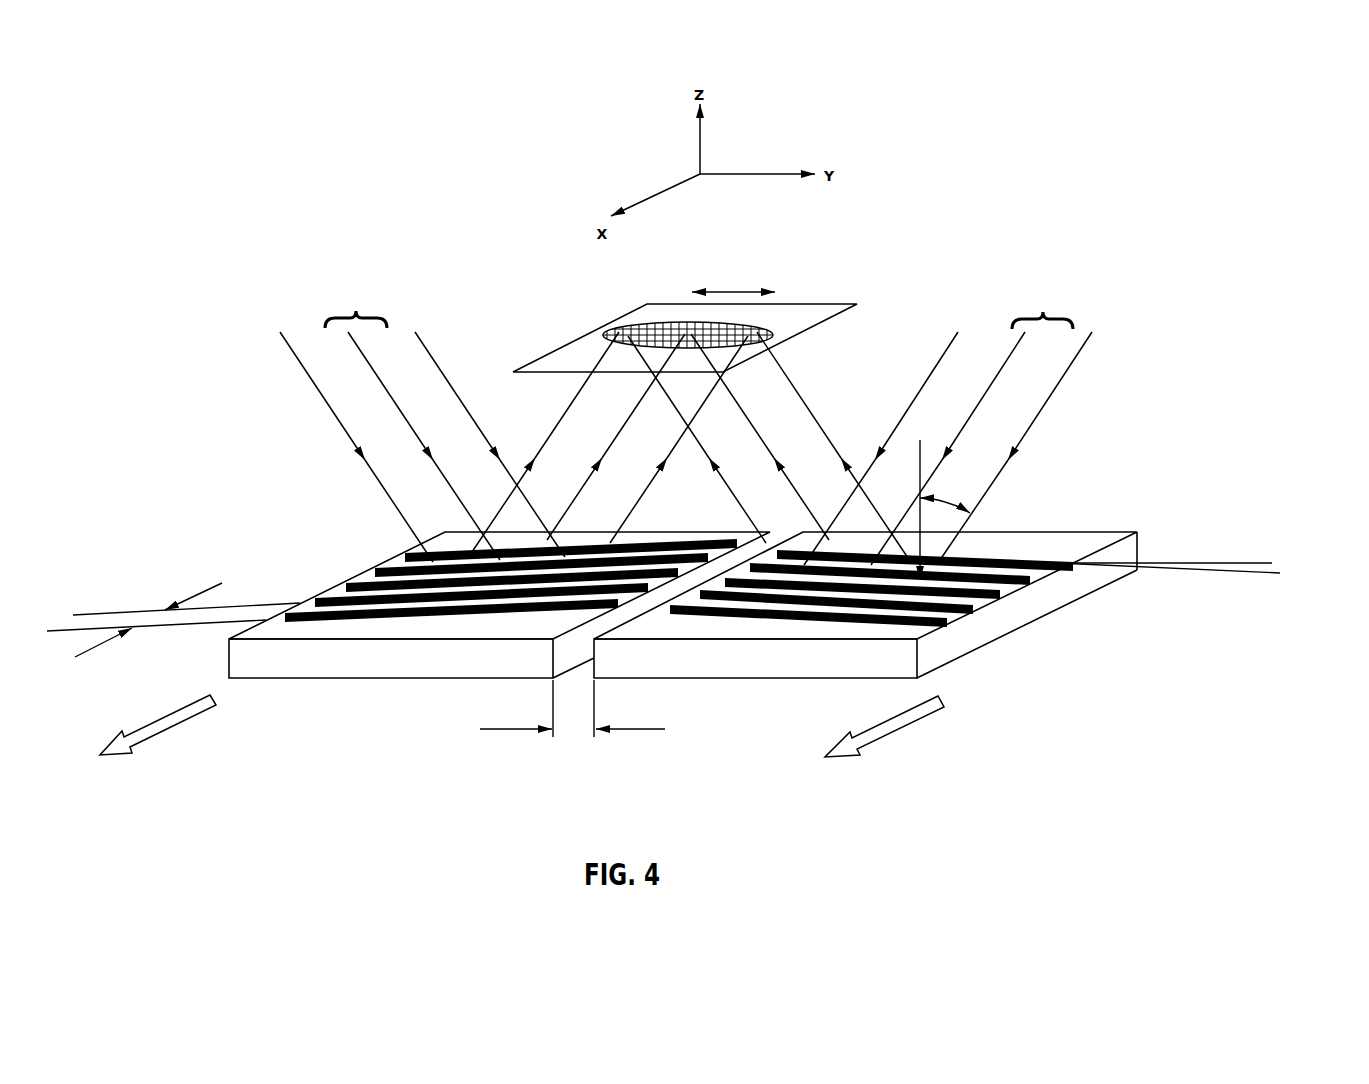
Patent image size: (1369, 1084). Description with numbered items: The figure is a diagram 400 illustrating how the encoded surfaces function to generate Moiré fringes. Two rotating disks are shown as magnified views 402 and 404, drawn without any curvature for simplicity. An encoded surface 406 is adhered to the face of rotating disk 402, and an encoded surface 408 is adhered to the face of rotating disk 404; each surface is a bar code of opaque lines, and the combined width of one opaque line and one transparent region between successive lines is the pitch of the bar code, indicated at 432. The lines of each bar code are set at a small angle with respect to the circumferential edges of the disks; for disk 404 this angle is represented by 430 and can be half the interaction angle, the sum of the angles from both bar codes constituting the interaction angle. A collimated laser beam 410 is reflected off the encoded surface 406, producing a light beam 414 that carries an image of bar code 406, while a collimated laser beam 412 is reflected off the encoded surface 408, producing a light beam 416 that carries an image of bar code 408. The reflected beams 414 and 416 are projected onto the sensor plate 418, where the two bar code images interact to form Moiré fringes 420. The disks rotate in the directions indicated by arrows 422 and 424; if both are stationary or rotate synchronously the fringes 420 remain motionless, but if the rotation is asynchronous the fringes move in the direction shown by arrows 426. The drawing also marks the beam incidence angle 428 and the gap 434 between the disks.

The diagram 400 is at (1010, 197).
The rotating disk 402 is at (245, 658).
The rotating disk 404 is at (915, 665).
The encoded surface 406 is at (380, 568).
The encoded surface 408 is at (1020, 585).
The collimated laser beam 410 is at (343, 312).
The collimated laser beam 412 is at (1033, 311).
The light beam 414 is at (605, 417).
The light beam 416 is at (768, 418).
The sensor plate 418 is at (817, 325).
The Moiré fringes 420 is at (643, 327).
The arrow 422 is at (182, 723).
The arrow 424 is at (907, 725).
The arrows 426 is at (728, 291).
The angle of incidence 428 is at (957, 493).
The angle of the bar code lines 430 is at (1273, 563).
The pitch of the bar code 432 is at (147, 622).
The gap between substrates 434 is at (577, 730).